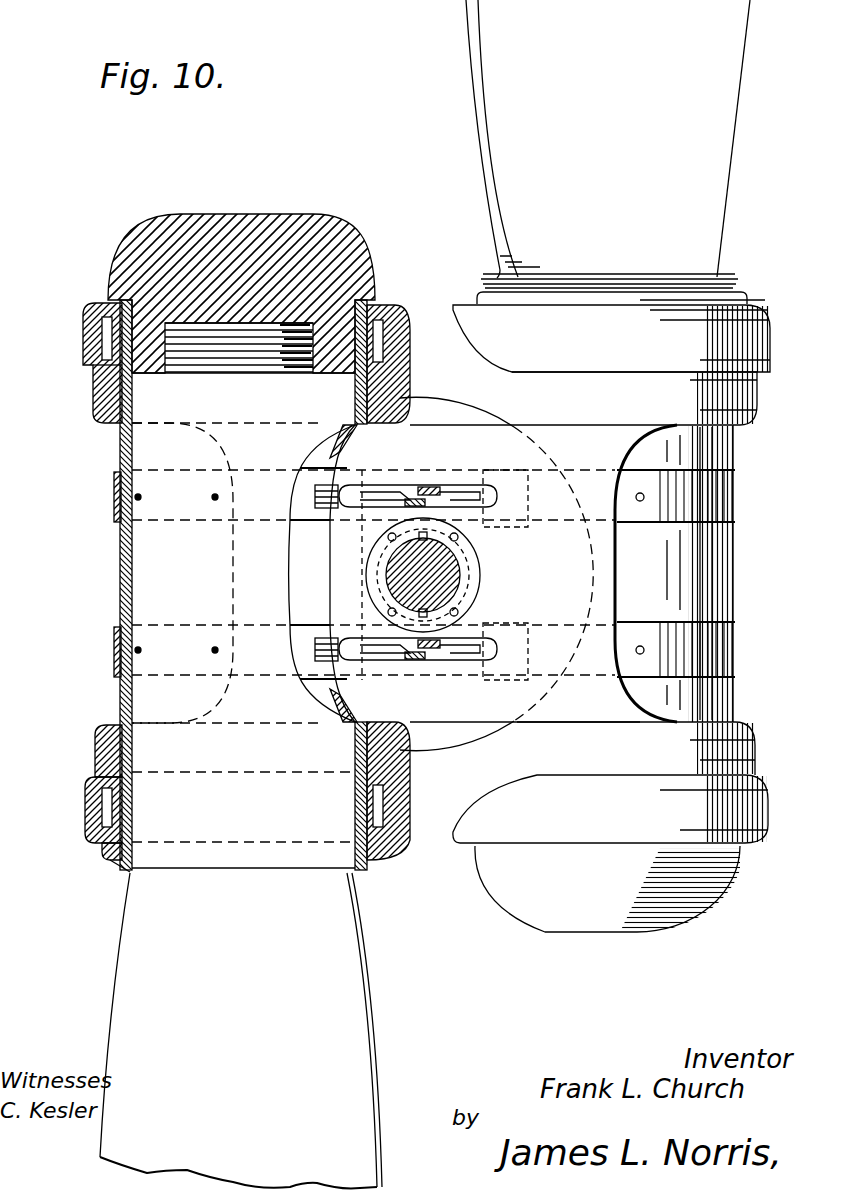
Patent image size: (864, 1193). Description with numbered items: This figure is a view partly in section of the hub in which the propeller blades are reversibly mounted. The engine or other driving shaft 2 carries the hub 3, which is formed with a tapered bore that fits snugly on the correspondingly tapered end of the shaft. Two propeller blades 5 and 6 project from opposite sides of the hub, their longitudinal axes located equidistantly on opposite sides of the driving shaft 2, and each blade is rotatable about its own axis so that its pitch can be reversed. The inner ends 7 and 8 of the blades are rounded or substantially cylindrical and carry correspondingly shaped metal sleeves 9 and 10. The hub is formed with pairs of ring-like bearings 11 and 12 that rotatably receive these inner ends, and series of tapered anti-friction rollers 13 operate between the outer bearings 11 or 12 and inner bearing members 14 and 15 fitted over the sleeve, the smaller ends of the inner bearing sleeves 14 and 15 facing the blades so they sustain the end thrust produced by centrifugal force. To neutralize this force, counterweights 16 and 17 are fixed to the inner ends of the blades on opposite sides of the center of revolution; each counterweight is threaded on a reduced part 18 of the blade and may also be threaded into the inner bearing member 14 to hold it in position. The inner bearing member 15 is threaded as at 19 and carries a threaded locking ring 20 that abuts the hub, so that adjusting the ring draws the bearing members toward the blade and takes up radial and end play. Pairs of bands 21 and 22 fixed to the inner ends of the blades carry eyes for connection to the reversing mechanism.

The driving shaft 2 is at (455, 570).
The hub 3 is at (385, 322).
The propeller blade 5 is at (241, 1030).
The propeller blade 6 is at (608, 144).
The inner end of propeller blade 7 is at (155, 575).
The inner end of propeller blade 8 is at (715, 552).
The metal sleeve 9 is at (120, 612).
The metal sleeve 10 is at (722, 588).
The ring-like bearing 11 is at (100, 335).
The ring-like bearing 12 is at (760, 340).
The anti-friction rollers 13 is at (100, 355).
The inner bearing member 14 is at (105, 378).
The inner bearing member 15 is at (98, 772).
The counterweight 16 is at (245, 222).
The counterweight 17 is at (623, 905).
The reduced part 18 is at (280, 345).
The threads 19 is at (120, 872).
The locking ring 20 is at (102, 855).
The band 21 is at (114, 498).
The band 22 is at (733, 497).